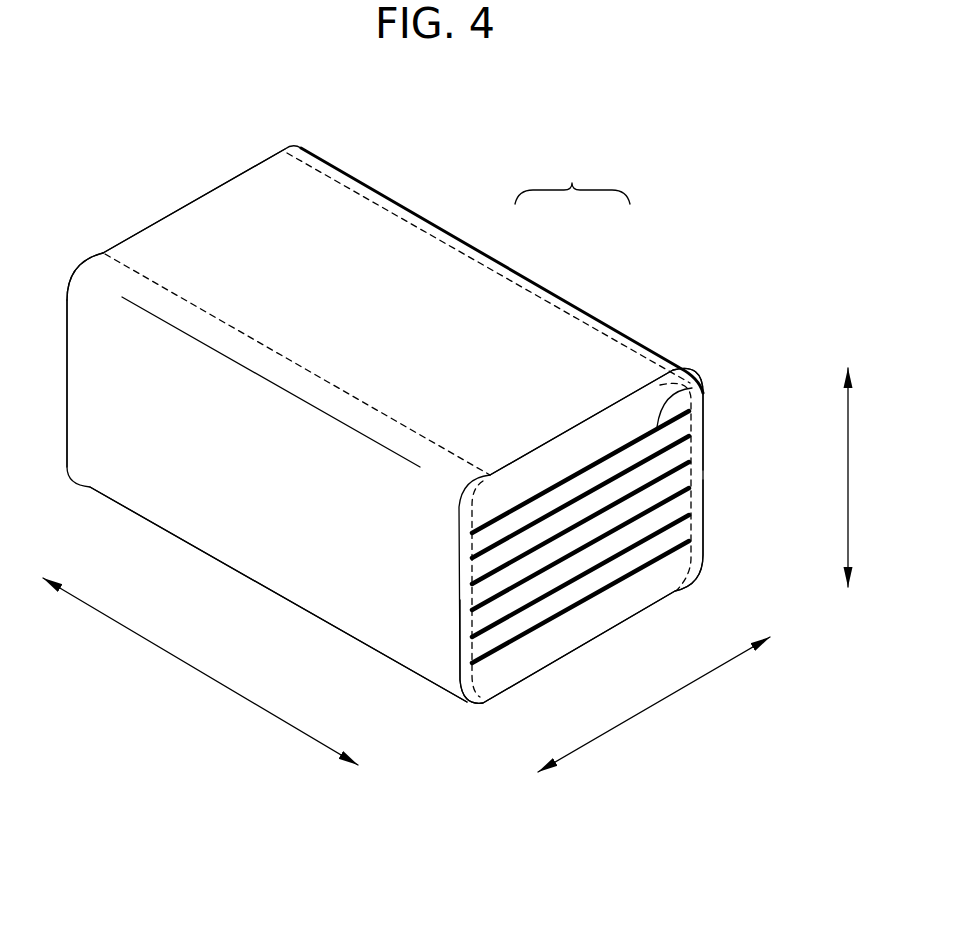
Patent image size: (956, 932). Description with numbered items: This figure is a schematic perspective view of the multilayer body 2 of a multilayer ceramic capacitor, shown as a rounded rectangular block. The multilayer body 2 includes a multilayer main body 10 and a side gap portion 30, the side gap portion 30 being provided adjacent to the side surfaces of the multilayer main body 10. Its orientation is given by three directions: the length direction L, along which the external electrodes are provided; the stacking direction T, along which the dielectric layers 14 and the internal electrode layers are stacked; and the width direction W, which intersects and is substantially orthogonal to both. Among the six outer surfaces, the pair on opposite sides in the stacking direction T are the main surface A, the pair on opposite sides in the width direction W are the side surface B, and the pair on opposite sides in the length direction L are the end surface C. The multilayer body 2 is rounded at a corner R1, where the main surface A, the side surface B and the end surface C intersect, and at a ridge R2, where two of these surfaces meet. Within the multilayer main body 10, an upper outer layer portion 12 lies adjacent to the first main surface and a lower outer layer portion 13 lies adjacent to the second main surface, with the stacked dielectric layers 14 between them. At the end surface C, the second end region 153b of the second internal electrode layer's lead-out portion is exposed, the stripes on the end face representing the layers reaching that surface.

The multilayer body 2 is at (572, 180).
The multilayer main body 10 is at (512, 313).
The upper outer layer portion 12 is at (637, 410).
The lower outer layer portion 13 is at (590, 625).
The dielectric layers 14 is at (678, 428).
The second end region 153b is at (692, 388).
The side gap portion 30 is at (170, 560).
The corner R1 is at (82, 272).
The ridge R2 is at (460, 238).
The main surface A is at (395, 737).
The side surface B is at (347, 175).
The end surface C is at (755, 508).
The length direction L is at (200, 671).
The width direction W is at (654, 704).
The stacking direction T is at (862, 477).